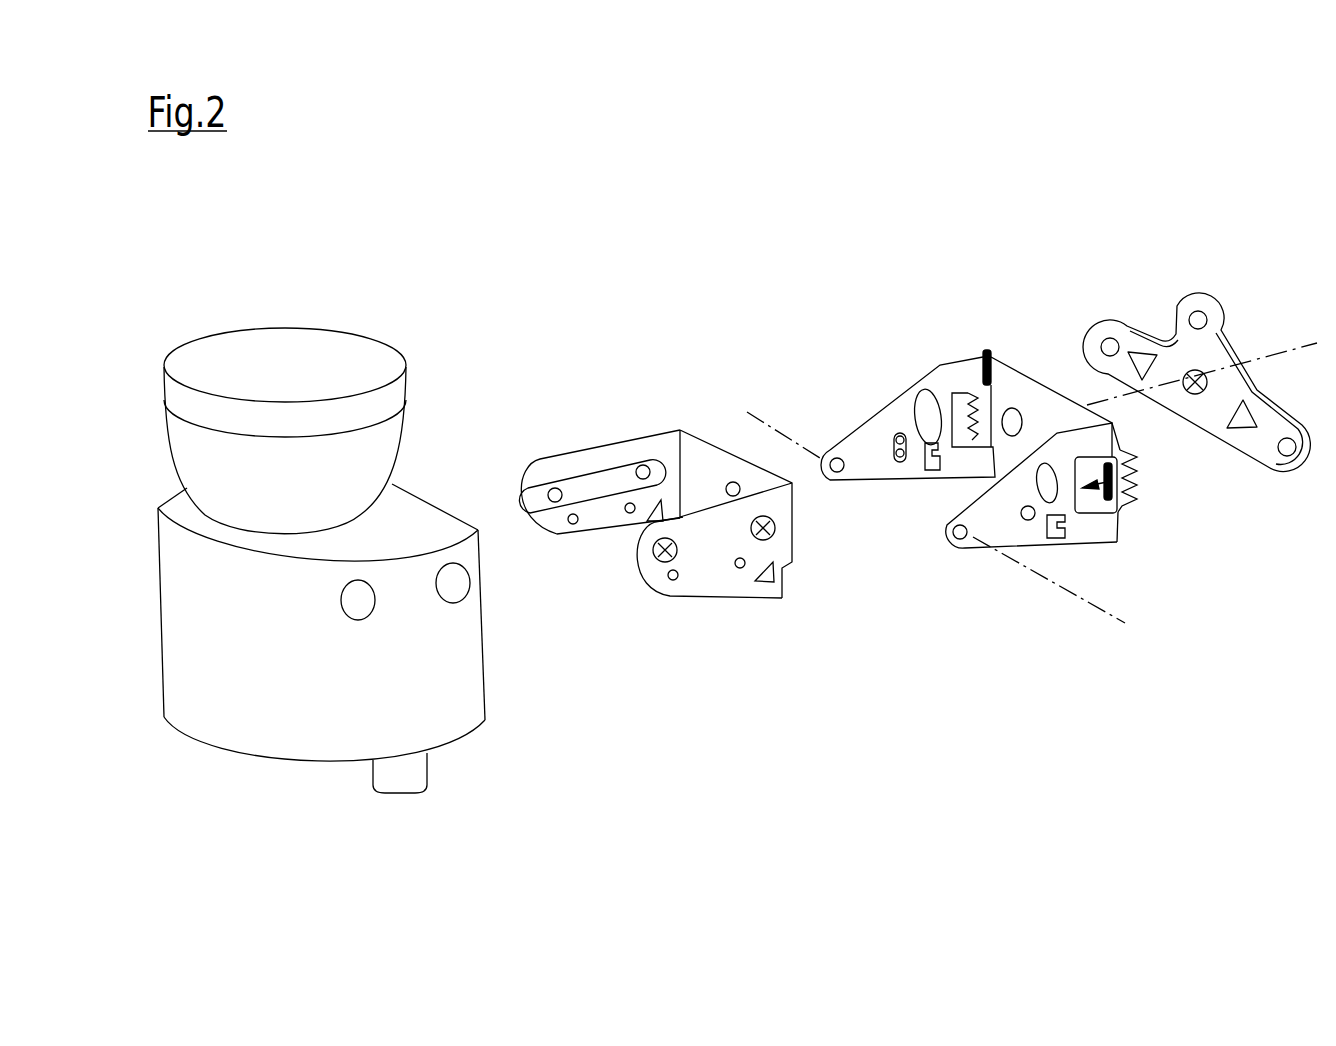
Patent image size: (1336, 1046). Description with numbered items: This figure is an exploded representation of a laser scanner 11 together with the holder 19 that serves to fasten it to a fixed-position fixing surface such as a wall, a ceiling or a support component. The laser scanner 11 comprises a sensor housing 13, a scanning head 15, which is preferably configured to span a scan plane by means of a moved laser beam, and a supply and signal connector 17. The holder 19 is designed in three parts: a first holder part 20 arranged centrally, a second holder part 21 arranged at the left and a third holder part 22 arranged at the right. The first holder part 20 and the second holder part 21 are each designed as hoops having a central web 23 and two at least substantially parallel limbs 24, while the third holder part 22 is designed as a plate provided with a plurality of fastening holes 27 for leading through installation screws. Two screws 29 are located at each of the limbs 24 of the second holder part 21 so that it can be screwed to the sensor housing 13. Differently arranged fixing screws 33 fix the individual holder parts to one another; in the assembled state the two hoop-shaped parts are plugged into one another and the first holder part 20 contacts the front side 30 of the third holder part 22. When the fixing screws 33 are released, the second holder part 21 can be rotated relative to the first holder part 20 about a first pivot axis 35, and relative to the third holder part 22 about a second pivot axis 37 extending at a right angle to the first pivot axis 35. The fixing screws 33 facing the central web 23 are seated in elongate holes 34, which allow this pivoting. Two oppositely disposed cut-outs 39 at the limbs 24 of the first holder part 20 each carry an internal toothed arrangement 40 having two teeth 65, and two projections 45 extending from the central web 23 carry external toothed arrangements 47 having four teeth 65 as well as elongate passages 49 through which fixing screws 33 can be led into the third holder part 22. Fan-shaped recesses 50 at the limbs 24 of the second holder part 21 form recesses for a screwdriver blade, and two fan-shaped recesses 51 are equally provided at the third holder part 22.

The laser scanner 11 is at (442, 342).
The sensor housing 13 is at (300, 725).
The scanning head 15 is at (300, 355).
The supply and signal connector 17 is at (415, 783).
The holder 19 is at (1088, 242).
The first holder part 20 is at (951, 327).
The second holder part 21 is at (652, 404).
The third holder part 22 is at (1257, 348).
The central web 23 is at (707, 453).
The limbs 24 is at (580, 462).
The fastening holes 27 is at (1105, 338).
The screws 29 is at (552, 490).
The front side 30 is at (1262, 472).
The fixing screws 33 is at (835, 458).
The elongate holes 34 is at (879, 455).
The first pivot axis 35 is at (770, 422).
The second pivot axis 37 is at (1303, 352).
The cut-outs 39 is at (933, 483).
The internal toothed arrangement 40 is at (1103, 558).
The projections 45 is at (987, 350).
The external toothed arrangements 47 is at (953, 395).
The passages 49 is at (1015, 405).
The fan-shaped recesses 50 is at (645, 524).
The fan-shaped recesses 51 is at (1141, 334).
The teeth 65 is at (900, 433).